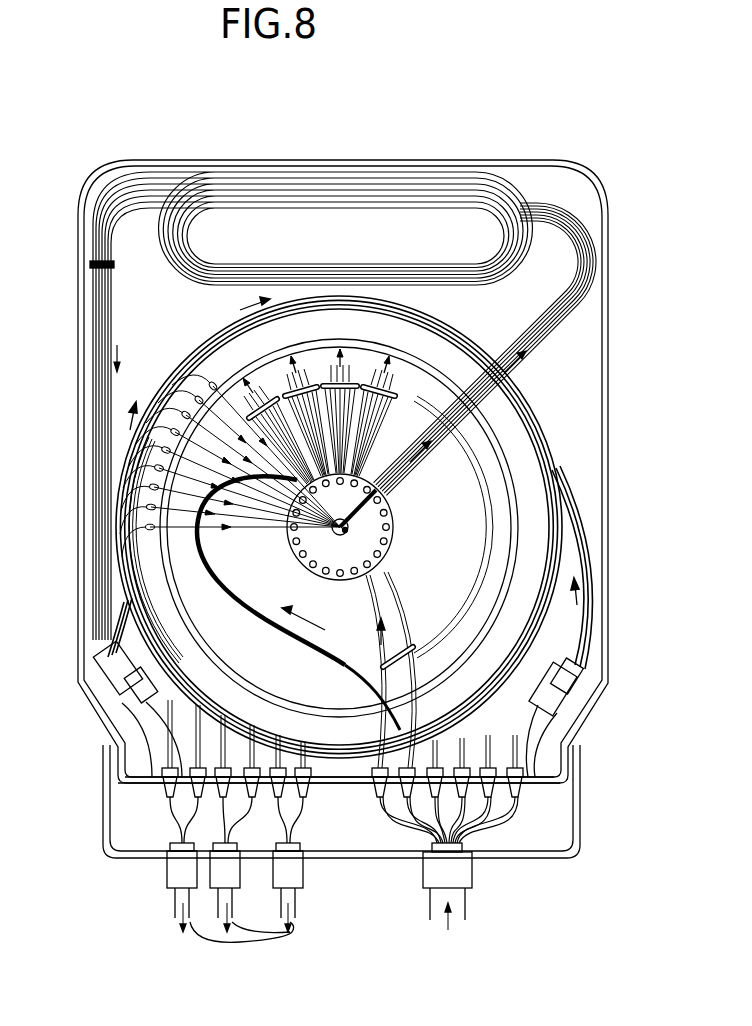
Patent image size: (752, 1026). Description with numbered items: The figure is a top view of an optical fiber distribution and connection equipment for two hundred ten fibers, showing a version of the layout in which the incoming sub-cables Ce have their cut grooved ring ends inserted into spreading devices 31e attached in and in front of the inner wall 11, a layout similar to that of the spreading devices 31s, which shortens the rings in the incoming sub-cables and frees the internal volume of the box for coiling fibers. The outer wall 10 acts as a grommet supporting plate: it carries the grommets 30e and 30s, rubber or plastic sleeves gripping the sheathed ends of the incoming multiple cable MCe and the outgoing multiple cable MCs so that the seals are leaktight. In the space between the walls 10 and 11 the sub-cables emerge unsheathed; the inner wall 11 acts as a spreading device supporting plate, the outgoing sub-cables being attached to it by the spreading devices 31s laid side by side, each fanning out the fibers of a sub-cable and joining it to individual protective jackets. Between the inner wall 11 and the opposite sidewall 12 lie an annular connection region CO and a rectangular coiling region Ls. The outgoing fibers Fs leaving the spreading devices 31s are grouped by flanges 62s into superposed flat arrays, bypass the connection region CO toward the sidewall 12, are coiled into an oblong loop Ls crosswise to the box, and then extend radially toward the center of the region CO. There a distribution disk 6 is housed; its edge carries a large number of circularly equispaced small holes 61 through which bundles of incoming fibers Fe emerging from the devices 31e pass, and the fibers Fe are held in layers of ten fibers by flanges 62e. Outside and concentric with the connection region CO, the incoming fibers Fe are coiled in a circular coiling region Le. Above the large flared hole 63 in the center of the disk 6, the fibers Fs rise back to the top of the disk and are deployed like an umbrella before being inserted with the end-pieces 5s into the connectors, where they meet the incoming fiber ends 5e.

The sidewall 12 is at (452, 166).
The outer wall 10 is at (562, 850).
The inner wall 11 is at (340, 785).
The coiling region (oblong loop) Ls is at (404, 210).
The flanges 62s is at (110, 264).
The outgoing optical fibers Fs is at (436, 447).
The annular connection region CO is at (190, 644).
The incoming optical fibers Fe is at (185, 380).
The circular coiling region Le is at (500, 684).
The distribution disk 6 is at (386, 531).
The small holes 61 is at (300, 556).
The large flared hole 63 is at (352, 527).
The flanges 62e is at (392, 400).
The end-pieces 5s is at (165, 505).
The output fiber ends 5e is at (168, 474).
The optical fiber spreading devices 31s is at (118, 695).
The spreading devices 31e is at (582, 672).
The incoming sub-cables Ce is at (545, 814).
The grommet 30s is at (300, 876).
The grommet 30e is at (472, 878).
The outgoing multiple cable MCs is at (250, 942).
The incoming multiple cable MCe is at (456, 922).